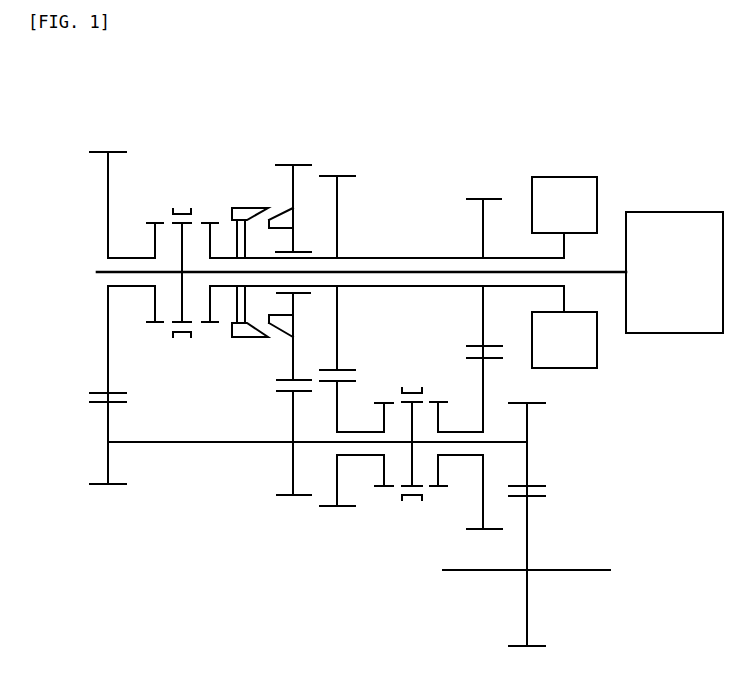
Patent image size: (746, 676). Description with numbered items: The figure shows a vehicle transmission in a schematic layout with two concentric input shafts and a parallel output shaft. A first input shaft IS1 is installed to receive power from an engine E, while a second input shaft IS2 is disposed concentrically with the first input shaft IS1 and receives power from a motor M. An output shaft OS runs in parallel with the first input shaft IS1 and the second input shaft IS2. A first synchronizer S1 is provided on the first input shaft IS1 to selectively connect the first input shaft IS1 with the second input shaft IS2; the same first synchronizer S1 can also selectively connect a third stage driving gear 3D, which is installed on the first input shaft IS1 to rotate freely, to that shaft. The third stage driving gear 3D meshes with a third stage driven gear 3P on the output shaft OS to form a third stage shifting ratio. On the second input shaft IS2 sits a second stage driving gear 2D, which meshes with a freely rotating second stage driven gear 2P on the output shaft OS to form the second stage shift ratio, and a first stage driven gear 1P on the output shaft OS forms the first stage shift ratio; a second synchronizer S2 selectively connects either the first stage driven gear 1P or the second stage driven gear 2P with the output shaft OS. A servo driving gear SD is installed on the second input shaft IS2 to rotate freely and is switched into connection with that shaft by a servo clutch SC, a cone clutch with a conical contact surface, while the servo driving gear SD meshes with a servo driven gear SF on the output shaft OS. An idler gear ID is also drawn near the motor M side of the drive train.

The first input shaft IS1 is at (101, 271).
The second input shaft IS2 is at (392, 257).
The third stage driving gear 3D is at (114, 150).
The first synchronizer S1 is at (182, 210).
The servo clutch SC is at (240, 340).
The servo driving gear SD is at (300, 162).
The shift driven gear SF is at (285, 498).
The second stage driving gear 2D is at (350, 173).
The second stage driven gear 2P is at (348, 510).
The second synchronizer S2 is at (412, 388).
The idle drive gear ID is at (473, 198).
The first stage driven gear 1P is at (472, 531).
The third stage driven gear 3P is at (100, 487).
The output shaft OS is at (193, 444).
The motor M is at (564, 272).
The engine E is at (674, 272).